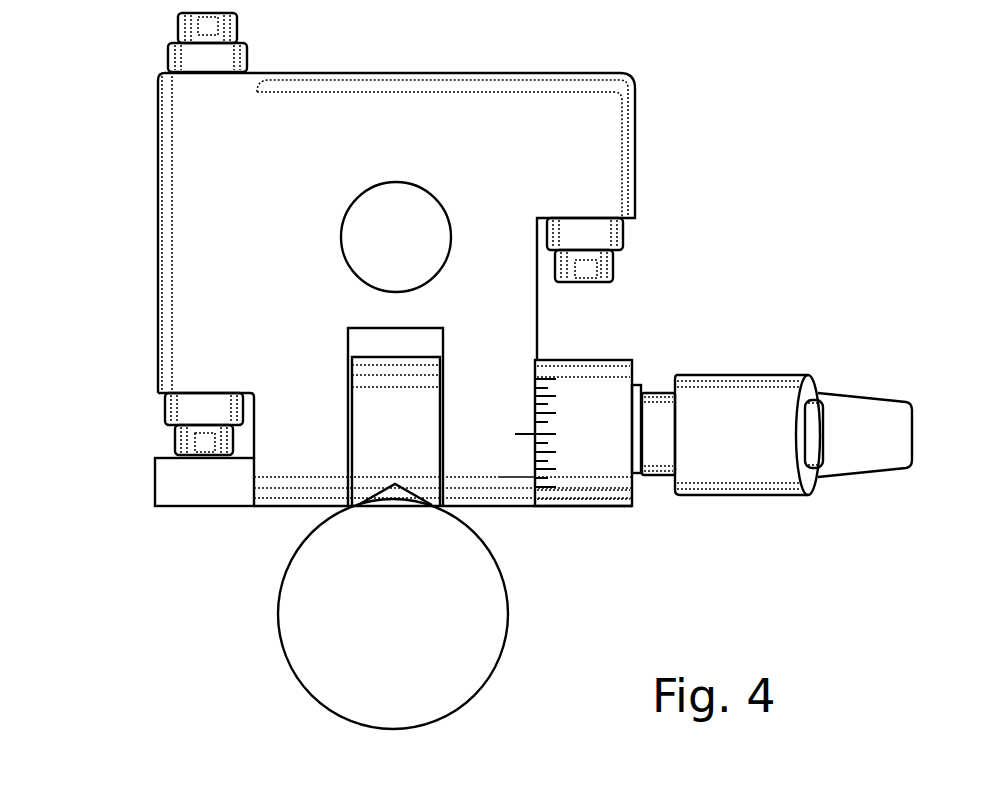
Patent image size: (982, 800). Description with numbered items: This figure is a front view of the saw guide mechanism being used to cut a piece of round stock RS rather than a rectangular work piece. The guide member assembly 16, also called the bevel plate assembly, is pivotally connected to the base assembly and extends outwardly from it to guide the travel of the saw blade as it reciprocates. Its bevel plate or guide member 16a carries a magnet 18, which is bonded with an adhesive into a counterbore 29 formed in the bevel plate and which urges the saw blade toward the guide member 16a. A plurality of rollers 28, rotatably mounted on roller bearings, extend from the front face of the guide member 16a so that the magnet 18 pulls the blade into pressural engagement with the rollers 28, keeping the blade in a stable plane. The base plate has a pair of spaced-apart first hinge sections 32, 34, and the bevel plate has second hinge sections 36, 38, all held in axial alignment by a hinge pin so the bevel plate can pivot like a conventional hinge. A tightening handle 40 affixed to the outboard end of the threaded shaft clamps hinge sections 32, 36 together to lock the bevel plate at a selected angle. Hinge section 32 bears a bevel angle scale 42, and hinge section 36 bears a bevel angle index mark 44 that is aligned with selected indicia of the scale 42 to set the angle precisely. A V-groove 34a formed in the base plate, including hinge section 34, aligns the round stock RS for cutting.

The guide member assembly 16 is at (372, 74).
The guide member 16a is at (618, 132).
The magnet 18 is at (432, 216).
The rollers 28 is at (168, 60).
The counterbore 29 is at (360, 268).
The first hinge section 32 is at (610, 488).
The first hinge section 34 is at (405, 425).
The V-groove 34a is at (394, 500).
The second hinge section 36 is at (522, 438).
The second hinge section 38 is at (302, 452).
The tightening handle 40 is at (760, 483).
The bevel angle scale 42 is at (580, 365).
The bevel angle index mark 44 is at (488, 457).
The round stock RS is at (345, 675).